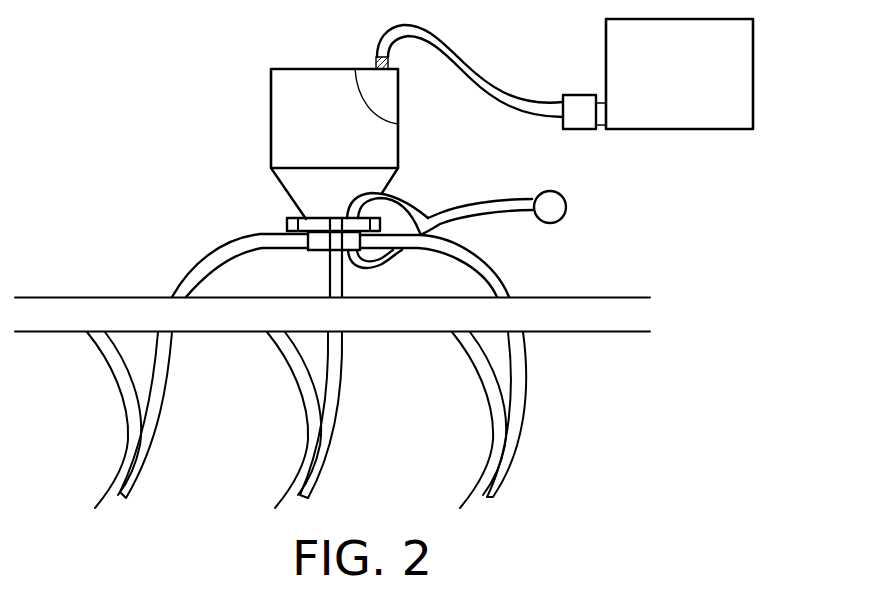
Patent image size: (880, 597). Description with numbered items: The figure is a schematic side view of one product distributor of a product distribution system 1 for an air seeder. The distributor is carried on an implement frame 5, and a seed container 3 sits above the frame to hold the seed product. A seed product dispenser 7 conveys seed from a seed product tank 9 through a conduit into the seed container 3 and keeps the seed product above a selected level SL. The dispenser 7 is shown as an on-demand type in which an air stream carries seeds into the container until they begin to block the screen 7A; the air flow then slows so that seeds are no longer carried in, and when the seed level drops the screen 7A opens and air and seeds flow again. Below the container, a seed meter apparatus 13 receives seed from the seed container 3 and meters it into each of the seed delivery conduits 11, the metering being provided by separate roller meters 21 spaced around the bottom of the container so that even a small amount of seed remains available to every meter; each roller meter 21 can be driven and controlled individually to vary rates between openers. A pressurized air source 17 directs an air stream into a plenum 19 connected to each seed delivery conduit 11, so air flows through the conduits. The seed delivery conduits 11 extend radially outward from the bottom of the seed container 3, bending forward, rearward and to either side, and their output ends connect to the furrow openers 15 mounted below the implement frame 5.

The product distribution system 1 is at (95, 153).
The seed container 3 is at (287, 124).
The implement frame 5 is at (583, 297).
The seed product dispenser 7 is at (580, 130).
The screen 7A is at (373, 62).
The seed product tank 9 is at (681, 130).
The seed delivery conduits 11 is at (210, 253).
The seed meter apparatus 13 is at (287, 222).
The furrow openers 15 is at (298, 476).
The pressurized air source 17 is at (567, 205).
The plenum 19 is at (317, 252).
The roller meters 21 is at (334, 216).
The selected level SL is at (398, 124).